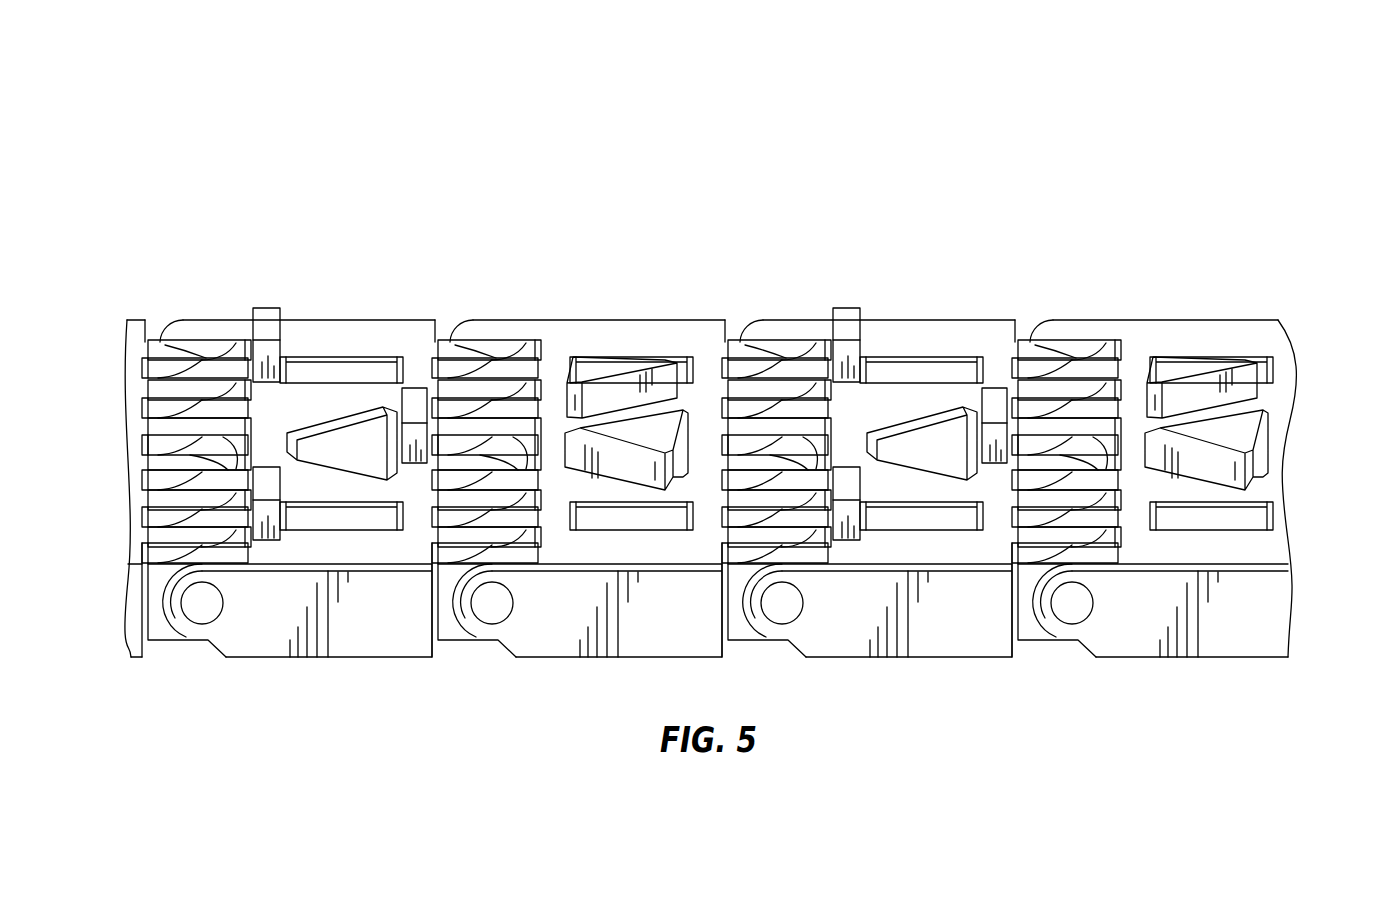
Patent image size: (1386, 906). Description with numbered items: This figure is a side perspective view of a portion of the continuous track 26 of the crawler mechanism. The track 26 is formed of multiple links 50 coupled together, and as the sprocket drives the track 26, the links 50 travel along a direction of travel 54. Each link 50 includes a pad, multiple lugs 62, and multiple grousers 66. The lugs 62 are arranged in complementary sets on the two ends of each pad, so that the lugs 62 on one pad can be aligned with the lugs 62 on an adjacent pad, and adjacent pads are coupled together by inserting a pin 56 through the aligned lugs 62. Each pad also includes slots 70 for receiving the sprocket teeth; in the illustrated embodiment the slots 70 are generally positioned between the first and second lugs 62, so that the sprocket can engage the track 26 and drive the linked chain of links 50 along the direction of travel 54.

The continuous track 26 is at (1065, 117).
The link 50 is at (397, 165).
The direction of travel 54 is at (297, 592).
The pin 56 is at (197, 602).
The lugs 62 is at (198, 353).
The grousers 66 is at (268, 322).
The slots 70 is at (342, 372).